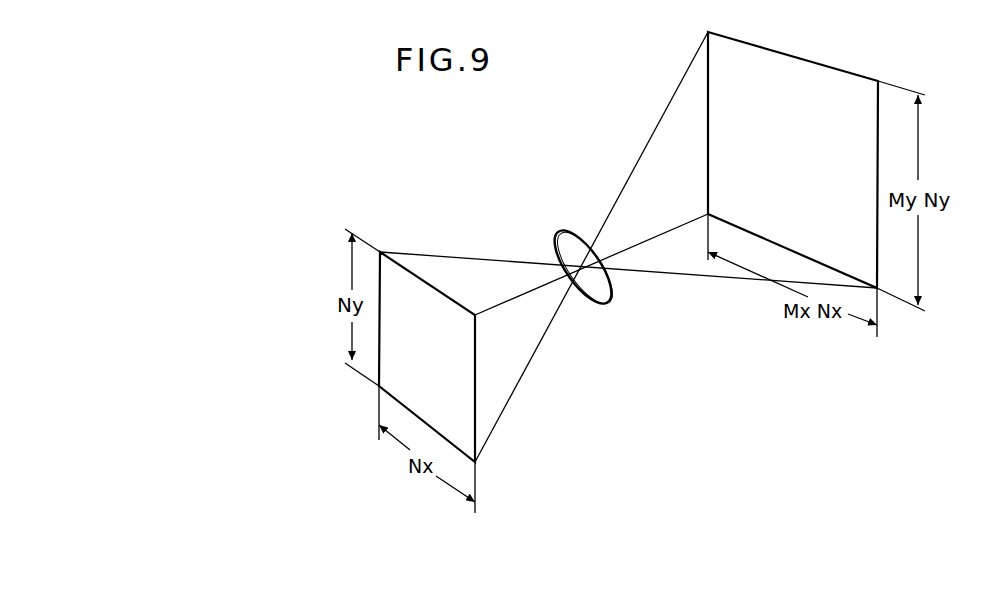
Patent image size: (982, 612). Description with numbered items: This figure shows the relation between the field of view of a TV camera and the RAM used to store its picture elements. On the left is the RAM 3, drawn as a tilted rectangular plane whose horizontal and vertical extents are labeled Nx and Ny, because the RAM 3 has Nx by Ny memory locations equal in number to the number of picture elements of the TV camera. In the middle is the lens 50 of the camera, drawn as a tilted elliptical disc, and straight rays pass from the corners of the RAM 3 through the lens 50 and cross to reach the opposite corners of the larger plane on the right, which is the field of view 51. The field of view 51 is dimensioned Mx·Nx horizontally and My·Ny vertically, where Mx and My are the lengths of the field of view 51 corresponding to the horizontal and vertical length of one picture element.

The RAM 3 is at (462, 356).
The lens 50 is at (572, 232).
The field of view 51 is at (847, 90).